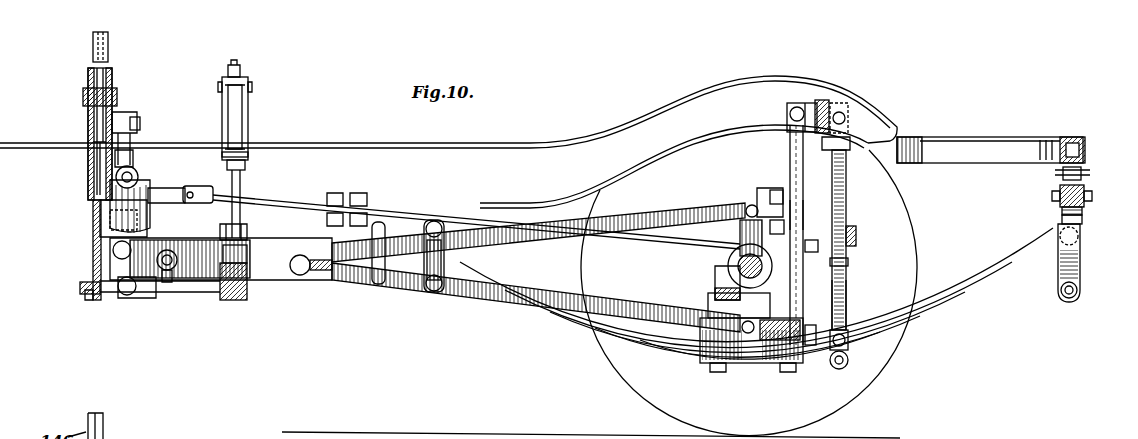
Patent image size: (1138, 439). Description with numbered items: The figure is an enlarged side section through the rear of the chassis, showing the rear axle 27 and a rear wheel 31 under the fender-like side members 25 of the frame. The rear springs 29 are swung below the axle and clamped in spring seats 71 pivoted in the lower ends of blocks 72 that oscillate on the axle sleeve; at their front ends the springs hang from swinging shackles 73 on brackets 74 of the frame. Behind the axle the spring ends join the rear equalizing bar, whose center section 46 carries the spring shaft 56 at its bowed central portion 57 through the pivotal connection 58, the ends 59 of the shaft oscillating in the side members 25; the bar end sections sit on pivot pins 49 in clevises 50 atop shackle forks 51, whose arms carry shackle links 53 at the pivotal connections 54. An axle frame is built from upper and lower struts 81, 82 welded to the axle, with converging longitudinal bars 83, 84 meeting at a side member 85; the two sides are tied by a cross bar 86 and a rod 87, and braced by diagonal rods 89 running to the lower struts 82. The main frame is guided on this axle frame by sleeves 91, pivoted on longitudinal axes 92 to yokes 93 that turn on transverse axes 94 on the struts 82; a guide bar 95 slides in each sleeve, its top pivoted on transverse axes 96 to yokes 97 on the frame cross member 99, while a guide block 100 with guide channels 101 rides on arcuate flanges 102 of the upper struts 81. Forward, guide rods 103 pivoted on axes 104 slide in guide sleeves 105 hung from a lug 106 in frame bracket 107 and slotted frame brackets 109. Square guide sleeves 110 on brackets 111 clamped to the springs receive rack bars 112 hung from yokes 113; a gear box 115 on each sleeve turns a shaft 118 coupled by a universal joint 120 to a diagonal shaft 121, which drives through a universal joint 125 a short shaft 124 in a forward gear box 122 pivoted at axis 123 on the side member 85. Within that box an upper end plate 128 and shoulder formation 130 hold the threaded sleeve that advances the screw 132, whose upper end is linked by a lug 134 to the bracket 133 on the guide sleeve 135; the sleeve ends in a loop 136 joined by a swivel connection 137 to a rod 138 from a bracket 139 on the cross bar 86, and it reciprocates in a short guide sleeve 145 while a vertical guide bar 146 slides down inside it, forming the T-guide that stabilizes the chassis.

The side members 25 is at (417, 141).
The rear axle 27 is at (719, 265).
The rear springs 29 is at (960, 298).
The rear wheels 31 is at (873, 377).
The center section 46 is at (1064, 211).
The pivot pins or bolts 49 is at (1052, 196).
The clevises 50 is at (1083, 218).
The shackle forks 51 is at (1081, 264).
The shackle links 53 is at (1060, 246).
The pivotal connections 54 is at (1065, 300).
The spring shaft 56 is at (981, 129).
The central portion 57 is at (1072, 137).
The pivotal connection 58 is at (1062, 176).
The ends of the spring shaft 59 is at (919, 138).
The spring seats or boxes 71 is at (740, 352).
The blocks 72 is at (713, 272).
The swinging shackles 73 is at (440, 293).
The brackets 74 is at (383, 240).
The upper vertical arms or struts 81 is at (740, 238).
The lower vertical arms or struts 82 is at (715, 287).
The upper longitudinal bar 83 is at (531, 238).
The lower longitudinal bar 84 is at (497, 302).
The side member 85 is at (278, 281).
The cross bar 86 is at (240, 258).
The rod 87 is at (178, 258).
The diagonal rods 89 is at (310, 275).
The sleeves 91 is at (803, 212).
The longitudinal axes 92 is at (809, 347).
The yokes 93 is at (782, 342).
The transverse axes 94 is at (752, 345).
The guide bar 95 is at (790, 144).
The transverse axes 96 is at (790, 110).
The yokes or lugs 97 is at (806, 100).
The frame cross member 99 is at (826, 100).
The guide block 100 is at (762, 192).
The guide channels 101 is at (776, 190).
The arcuate flanges 102 is at (776, 229).
The guide rods 103 is at (240, 180).
The longitudinal axes 104 is at (247, 230).
The guide sleeve 105 is at (240, 110).
The yoke or lug 106 is at (248, 80).
The frame bracket 107 is at (247, 123).
The frame brackets 109 is at (248, 156).
The square guide sleeves 110 is at (848, 290).
The brackets 111 is at (847, 346).
The rack bar 112 is at (846, 182).
The yoke 113 is at (848, 112).
The gear box 115 is at (856, 234).
The shaft 118 is at (848, 264).
The universal joint 120 is at (809, 245).
The shaft 121 is at (398, 208).
The gear box 122 is at (115, 204).
The longitudinal axis 123 is at (113, 250).
The short shaft 124 is at (168, 203).
The universal joint 125 is at (192, 191).
The upper end plate 128 is at (150, 192).
The shoulder formation 130 is at (136, 176).
The screw 132 is at (130, 162).
The bracket 133 is at (122, 114).
The lug or link 134 is at (140, 128).
The guide sleeve 135 is at (88, 118).
The yoke or loop 136 is at (95, 262).
The pivotal and swivel connection 137 is at (110, 290).
The rod 138 is at (195, 292).
The bracket 139 is at (232, 300).
The short guide sleeve 145 is at (84, 96).
The vertical guide bar 146 is at (90, 64).